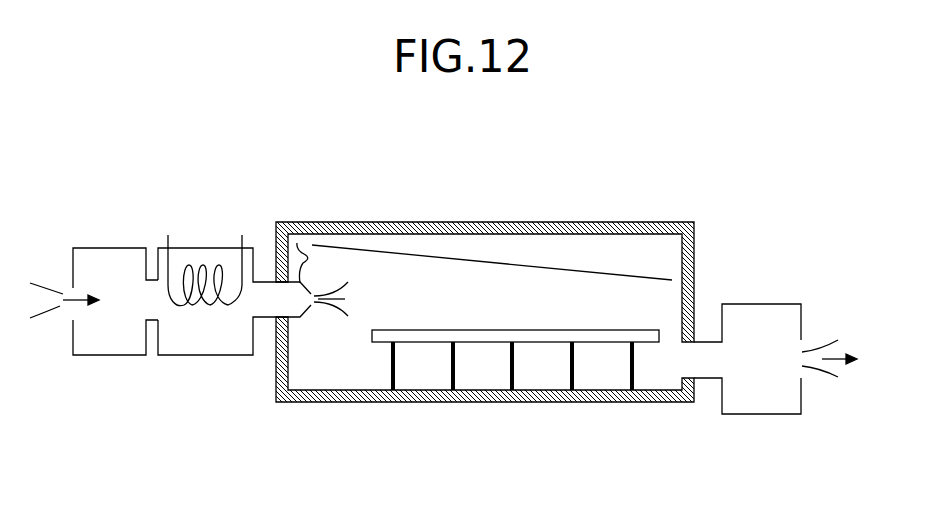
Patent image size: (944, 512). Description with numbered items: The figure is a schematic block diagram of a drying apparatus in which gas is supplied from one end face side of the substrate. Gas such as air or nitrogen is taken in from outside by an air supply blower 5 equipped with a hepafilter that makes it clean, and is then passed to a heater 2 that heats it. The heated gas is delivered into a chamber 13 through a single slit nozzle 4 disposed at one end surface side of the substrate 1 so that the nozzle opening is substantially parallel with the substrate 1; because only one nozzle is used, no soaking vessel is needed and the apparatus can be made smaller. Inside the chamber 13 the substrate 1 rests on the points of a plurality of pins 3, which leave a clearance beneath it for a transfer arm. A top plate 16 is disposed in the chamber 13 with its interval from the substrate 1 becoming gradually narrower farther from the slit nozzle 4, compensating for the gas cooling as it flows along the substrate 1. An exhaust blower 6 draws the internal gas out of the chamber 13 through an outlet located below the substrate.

The substrate 1 is at (648, 329).
The heater 2 is at (182, 255).
The pins 3 is at (630, 373).
The slit nozzle 4 is at (297, 243).
The air supply blower 5 is at (110, 255).
The exhaust blower 6 is at (767, 310).
The chamber 13 is at (650, 222).
The top plate 16 is at (432, 257).